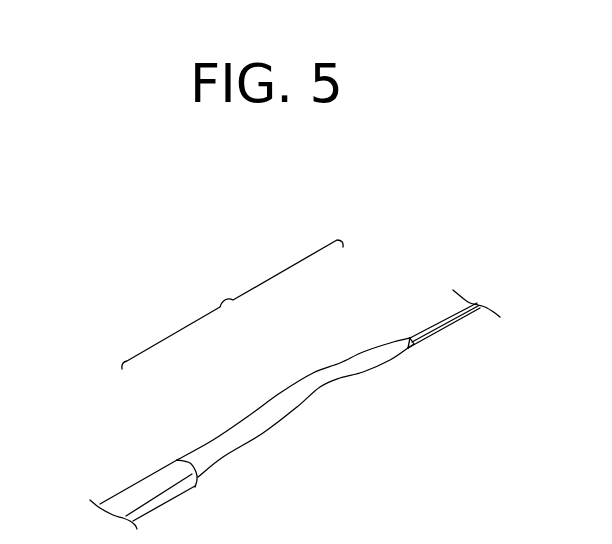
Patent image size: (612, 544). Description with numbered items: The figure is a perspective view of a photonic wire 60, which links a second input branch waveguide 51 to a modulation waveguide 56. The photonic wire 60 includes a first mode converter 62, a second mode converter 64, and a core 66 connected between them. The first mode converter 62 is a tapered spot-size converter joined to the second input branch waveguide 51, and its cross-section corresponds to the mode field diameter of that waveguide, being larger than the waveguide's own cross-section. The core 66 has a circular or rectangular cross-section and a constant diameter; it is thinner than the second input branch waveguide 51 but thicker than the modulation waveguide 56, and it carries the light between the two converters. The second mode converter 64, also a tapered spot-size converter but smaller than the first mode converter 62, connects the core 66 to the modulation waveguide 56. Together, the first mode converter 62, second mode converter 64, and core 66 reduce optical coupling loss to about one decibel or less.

The second input branch waveguide 51 is at (143, 488).
The photonic wire 60 is at (232, 304).
The first mode converter 62 is at (202, 458).
The core 66 is at (313, 377).
The second mode converter 64 is at (400, 345).
The modulation waveguide 56 is at (440, 323).